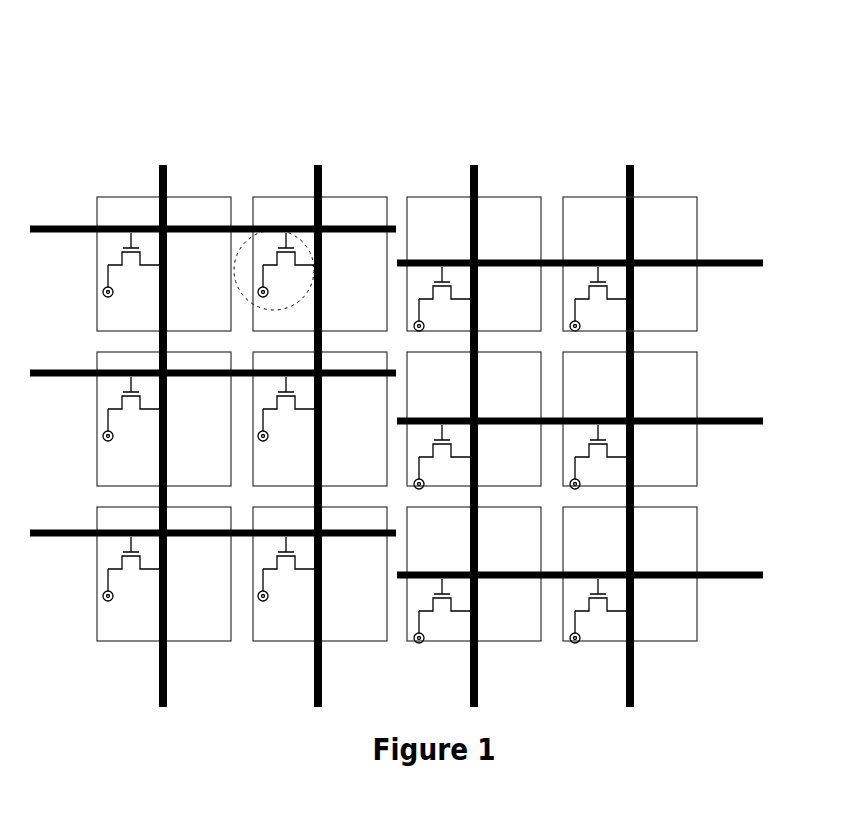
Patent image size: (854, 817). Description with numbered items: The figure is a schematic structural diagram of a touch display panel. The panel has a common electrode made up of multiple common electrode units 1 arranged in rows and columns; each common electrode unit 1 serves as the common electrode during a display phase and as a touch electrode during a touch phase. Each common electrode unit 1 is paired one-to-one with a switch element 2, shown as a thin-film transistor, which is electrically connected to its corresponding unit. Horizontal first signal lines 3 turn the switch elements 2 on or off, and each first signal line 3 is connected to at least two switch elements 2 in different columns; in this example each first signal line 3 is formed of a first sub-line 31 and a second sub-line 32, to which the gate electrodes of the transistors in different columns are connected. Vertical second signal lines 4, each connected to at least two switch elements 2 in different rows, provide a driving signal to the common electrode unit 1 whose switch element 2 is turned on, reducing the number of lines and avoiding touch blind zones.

The common electrode unit 1 is at (685, 226).
The switch element 2 is at (238, 243).
The first signal line 3 is at (396, 134).
The first sub-line 31 is at (376, 213).
The second sub-line 32 is at (506, 246).
The second signal line 4 is at (328, 149).